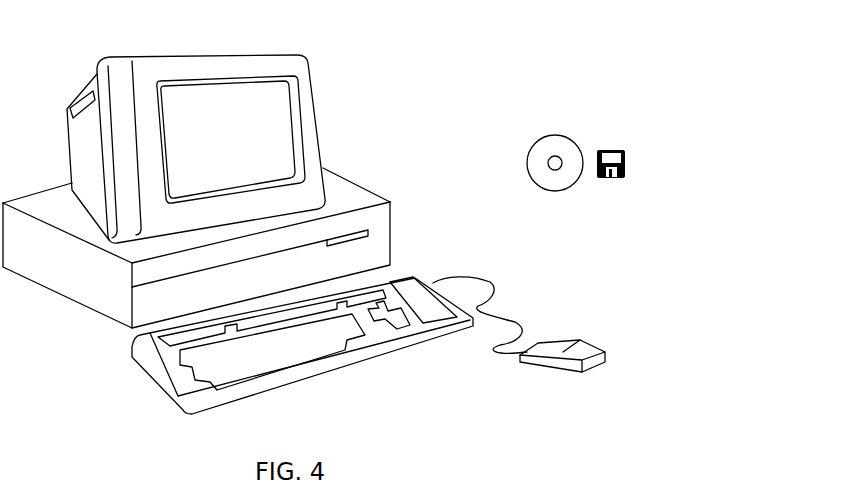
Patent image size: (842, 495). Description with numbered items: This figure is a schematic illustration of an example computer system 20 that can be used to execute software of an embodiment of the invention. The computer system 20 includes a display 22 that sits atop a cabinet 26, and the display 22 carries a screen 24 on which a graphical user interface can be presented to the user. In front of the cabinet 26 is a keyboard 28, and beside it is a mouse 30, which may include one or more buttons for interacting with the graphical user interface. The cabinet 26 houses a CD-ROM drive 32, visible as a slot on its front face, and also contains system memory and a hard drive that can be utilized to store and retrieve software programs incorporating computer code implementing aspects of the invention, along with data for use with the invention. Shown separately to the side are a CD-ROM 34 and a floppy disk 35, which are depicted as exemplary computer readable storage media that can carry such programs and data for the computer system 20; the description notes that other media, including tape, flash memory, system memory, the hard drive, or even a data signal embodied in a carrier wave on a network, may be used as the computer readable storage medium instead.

The computer system 20 is at (490, 36).
The display 22 is at (225, 149).
The screen 24 is at (290, 98).
The cabinet 26 is at (222, 264).
The keyboard 28 is at (305, 379).
The mouse 30 is at (595, 342).
The CD-ROM drive 32 is at (368, 230).
The CD-ROM 34 is at (554, 132).
The floppy disk 35 is at (612, 146).